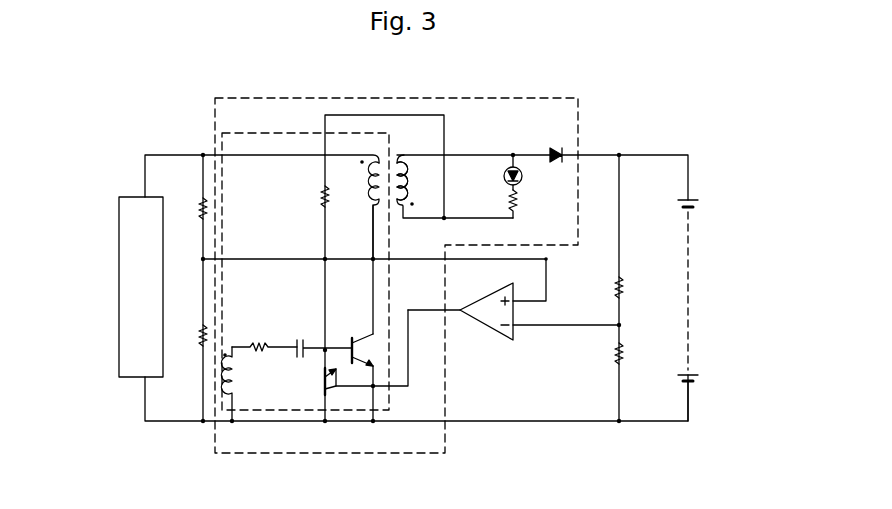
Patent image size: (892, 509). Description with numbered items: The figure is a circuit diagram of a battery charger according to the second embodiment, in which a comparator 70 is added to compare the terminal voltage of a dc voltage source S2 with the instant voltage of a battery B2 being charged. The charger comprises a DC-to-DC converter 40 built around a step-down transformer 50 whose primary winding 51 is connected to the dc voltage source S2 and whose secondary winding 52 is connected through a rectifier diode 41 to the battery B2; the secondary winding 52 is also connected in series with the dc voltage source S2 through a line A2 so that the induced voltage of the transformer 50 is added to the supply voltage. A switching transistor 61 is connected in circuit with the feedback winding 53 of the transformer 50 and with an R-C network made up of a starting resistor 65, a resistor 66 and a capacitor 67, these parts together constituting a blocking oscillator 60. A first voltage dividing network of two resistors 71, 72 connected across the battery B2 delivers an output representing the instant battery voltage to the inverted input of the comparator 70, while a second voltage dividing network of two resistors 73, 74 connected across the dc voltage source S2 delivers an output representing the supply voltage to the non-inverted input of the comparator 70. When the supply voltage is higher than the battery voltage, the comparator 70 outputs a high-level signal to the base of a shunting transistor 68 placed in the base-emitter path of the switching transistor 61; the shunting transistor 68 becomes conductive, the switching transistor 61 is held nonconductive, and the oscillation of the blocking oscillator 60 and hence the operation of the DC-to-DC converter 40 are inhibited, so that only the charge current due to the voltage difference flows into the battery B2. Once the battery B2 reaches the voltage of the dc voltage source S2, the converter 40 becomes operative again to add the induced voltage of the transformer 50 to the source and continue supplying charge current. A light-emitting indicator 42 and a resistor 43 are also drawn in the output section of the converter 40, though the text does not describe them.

The DC-to-DC converter 40 is at (563, 96).
The rectifier diode 41 is at (557, 147).
The light emitting diode 42 is at (524, 180).
The resistor 43 is at (519, 204).
The step-down transformer 50 is at (392, 157).
The primary winding 51 is at (363, 158).
The secondary winding 52 is at (408, 168).
The feedback winding 53 is at (237, 375).
The blocking oscillator 60 is at (252, 131).
The switching transistor 61 is at (360, 338).
The starting resistor 65 is at (318, 198).
The resistor 66 is at (258, 340).
The capacitor 67 is at (298, 338).
The shunting transistor 68 is at (322, 383).
The comparator 70 is at (503, 332).
The resistor 71 is at (626, 288).
The resistor 72 is at (610, 353).
The resistor 73 is at (210, 207).
The resistor 74 is at (196, 338).
The line A2 is at (375, 115).
The dc voltage source S2 is at (120, 212).
The battery B2 is at (702, 202).